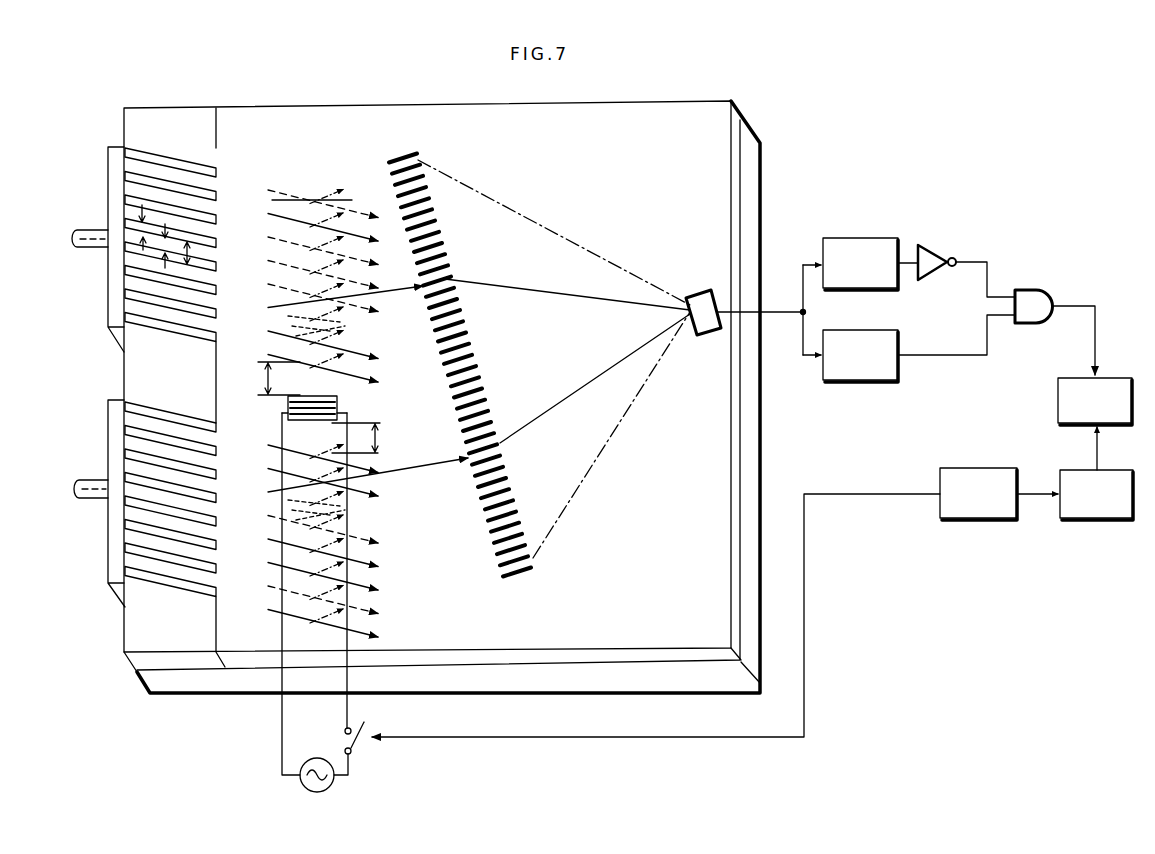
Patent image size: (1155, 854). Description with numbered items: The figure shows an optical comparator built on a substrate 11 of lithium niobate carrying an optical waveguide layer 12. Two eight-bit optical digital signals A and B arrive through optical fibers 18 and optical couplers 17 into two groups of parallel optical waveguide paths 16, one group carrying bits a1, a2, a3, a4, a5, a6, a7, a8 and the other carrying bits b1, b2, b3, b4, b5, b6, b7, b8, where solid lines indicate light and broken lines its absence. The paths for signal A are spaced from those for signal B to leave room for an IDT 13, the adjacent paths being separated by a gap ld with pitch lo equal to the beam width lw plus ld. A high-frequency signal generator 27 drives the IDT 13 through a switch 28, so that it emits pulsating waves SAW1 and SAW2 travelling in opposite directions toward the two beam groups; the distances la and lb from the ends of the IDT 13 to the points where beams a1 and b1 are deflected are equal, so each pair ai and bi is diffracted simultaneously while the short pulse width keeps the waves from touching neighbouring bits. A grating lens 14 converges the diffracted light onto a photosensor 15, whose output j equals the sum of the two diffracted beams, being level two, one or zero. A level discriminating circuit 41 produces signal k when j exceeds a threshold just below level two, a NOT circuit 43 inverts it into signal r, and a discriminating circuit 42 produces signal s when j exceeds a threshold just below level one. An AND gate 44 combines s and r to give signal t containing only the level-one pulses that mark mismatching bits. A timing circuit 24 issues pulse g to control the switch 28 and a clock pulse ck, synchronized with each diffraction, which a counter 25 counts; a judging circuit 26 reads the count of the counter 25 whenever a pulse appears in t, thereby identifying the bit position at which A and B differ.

The substrate 11 is at (753, 468).
The optical waveguide layer 12 is at (740, 418).
The IDT 13 is at (340, 398).
The grating lens 14 is at (486, 383).
The photosensor 15 is at (698, 296).
The optical waveguide paths 16 is at (178, 330).
The optical couplers 17 is at (112, 312).
The optical fibers 18 is at (82, 248).
The timing circuit 24 is at (968, 520).
The counter 25 is at (1097, 520).
The judging circuit 26 is at (1058, 413).
The high-frequency signal generator 27 is at (300, 782).
The switch 28 is at (360, 738).
The level discriminating circuit 41 is at (862, 237).
The discriminating circuit 42 is at (871, 381).
The NOT circuit 43 is at (935, 252).
The AND gate 44 is at (1045, 291).
The optical bit signal a1 is at (219, 428).
The optical bit signal a2 is at (219, 452).
The optical bit signal a3 is at (219, 475).
The optical bit signal a4 is at (219, 498).
The optical bit signal a5 is at (219, 522).
The optical bit signal a6 is at (219, 546).
The optical bit signal a7 is at (219, 569).
The optical bit signal a8 is at (219, 592).
The optical bit signal b1 is at (219, 338).
The optical bit signal b2 is at (219, 314).
The optical bit signal b3 is at (219, 290).
The optical bit signal b4 is at (219, 267).
The optical bit signal b5 is at (219, 244).
The optical bit signal b6 is at (219, 220).
The optical bit signal b7 is at (219, 196).
The optical bit signal b8 is at (219, 173).
The optical digital signal A is at (66, 492).
The optical digital signal B is at (54, 241).
The pulse signal g is at (806, 667).
The sensor output signal j is at (788, 309).
The signal k is at (912, 256).
The signal r is at (983, 262).
The signal s is at (973, 357).
The signal t is at (1100, 340).
The clock pulse ck is at (1033, 497).
The distance la is at (356, 438).
The distance lb is at (277, 378).
The pitch lo is at (182, 247).
The beam width lw is at (143, 232).
The spacing ld is at (160, 248).
The SAW 1 SAW1 is at (352, 500).
The SAW 2 SAW2 is at (352, 316).